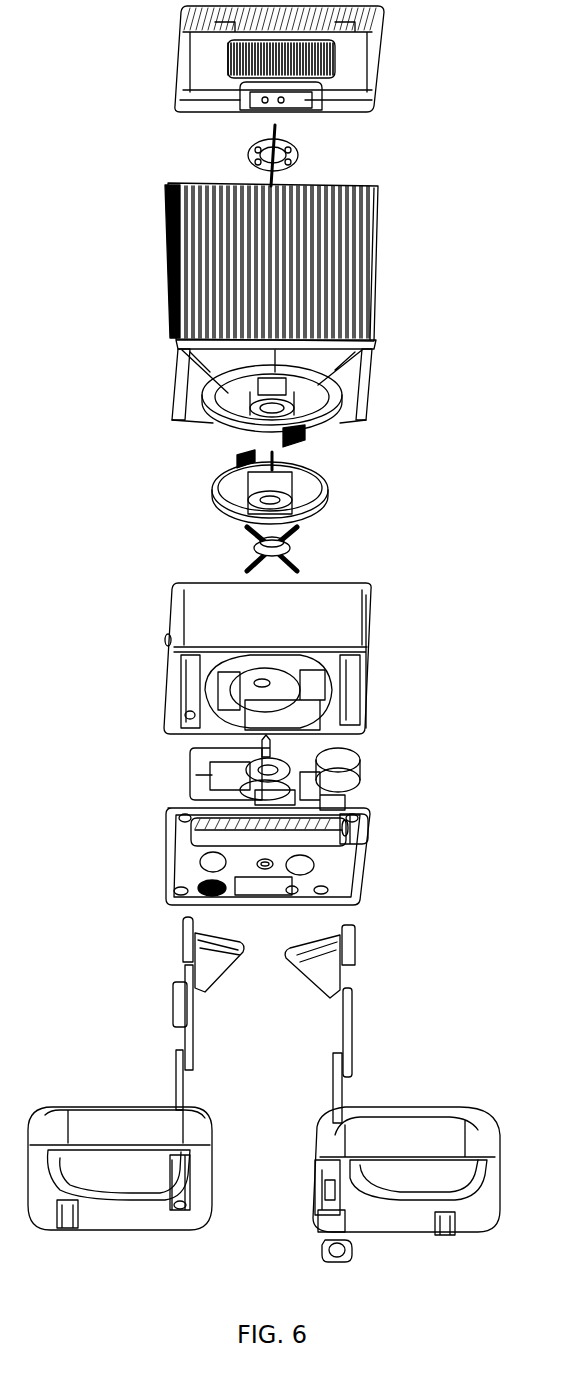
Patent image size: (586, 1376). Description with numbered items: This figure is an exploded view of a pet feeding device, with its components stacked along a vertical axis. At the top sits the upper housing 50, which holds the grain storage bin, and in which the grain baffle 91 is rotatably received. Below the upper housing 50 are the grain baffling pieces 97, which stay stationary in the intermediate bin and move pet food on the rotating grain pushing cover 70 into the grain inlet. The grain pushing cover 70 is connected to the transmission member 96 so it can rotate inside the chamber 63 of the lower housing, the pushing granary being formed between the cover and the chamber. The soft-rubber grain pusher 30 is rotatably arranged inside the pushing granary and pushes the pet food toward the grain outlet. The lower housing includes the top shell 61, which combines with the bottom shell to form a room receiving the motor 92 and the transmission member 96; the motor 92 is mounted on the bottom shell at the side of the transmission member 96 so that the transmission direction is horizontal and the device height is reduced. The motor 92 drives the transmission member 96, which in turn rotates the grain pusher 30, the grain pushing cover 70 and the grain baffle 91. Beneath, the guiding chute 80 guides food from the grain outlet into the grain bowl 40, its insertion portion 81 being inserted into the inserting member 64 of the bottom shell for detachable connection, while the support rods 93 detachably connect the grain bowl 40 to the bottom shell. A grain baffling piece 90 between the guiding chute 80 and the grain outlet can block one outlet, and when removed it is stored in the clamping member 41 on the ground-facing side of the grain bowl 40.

The grain baffle 91 is at (300, 147).
The upper housing 50 is at (300, 272).
The grain baffling pieces 97 is at (335, 413).
The grain pushing cover 70 is at (312, 492).
The grain pusher 30 is at (300, 540).
The top shell 61 is at (305, 615).
The transmission member 96 is at (283, 750).
The motor 92 is at (345, 785).
The inserting member 64 is at (358, 825).
The chamber 63 is at (345, 863).
The insertion portion 81 is at (312, 940).
The guiding chute 80 is at (355, 940).
The support rods 93 is at (352, 1043).
The grain bowl 40 is at (388, 1118).
The clamping member 41 is at (347, 1177).
The grain baffling piece 90 is at (352, 1258).